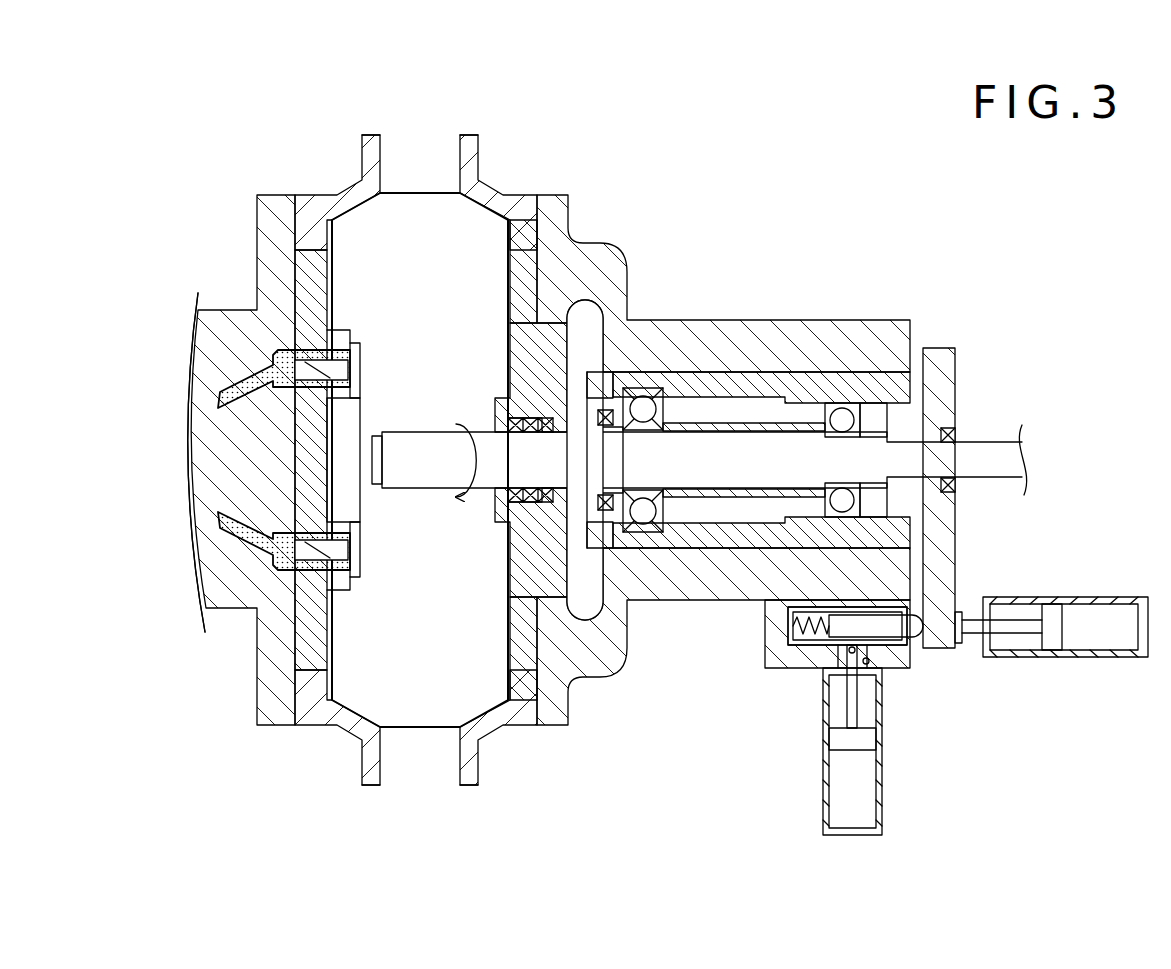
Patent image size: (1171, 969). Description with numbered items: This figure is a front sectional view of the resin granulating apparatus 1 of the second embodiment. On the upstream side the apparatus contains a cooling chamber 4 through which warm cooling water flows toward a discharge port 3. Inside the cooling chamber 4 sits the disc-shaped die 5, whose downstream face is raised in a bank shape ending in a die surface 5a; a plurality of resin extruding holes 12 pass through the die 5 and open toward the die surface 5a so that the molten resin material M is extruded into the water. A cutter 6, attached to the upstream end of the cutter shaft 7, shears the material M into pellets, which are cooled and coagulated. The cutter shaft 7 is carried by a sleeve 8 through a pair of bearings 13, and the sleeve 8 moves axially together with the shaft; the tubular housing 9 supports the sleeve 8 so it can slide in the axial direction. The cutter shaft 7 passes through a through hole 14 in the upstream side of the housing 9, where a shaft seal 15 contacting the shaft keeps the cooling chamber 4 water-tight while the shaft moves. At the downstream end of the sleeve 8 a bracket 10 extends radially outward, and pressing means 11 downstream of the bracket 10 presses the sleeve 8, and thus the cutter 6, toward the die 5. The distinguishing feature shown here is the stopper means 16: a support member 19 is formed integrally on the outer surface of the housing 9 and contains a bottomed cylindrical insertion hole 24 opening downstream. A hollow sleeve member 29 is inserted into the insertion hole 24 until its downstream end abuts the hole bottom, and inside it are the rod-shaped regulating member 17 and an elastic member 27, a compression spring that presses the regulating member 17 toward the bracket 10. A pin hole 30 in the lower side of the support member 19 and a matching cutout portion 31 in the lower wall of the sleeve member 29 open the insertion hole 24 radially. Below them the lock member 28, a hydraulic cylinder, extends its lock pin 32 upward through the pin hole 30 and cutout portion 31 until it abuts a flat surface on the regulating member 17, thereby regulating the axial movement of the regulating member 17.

The resin granulating apparatus 1 is at (728, 222).
The discharge port 3 is at (455, 165).
The cooling chamber 4 is at (425, 299).
The die 5 is at (322, 639).
The die surface 5a is at (352, 364).
The cutter 6 is at (352, 550).
The cutter shaft 7 is at (487, 432).
The sleeve 8 is at (757, 382).
The housing 9 is at (707, 352).
The bracket 10 is at (940, 350).
The pressing means 11 is at (1076, 597).
The resin extruding holes 12 is at (352, 383).
The bearings 13 is at (647, 388).
The through hole 14 is at (488, 480).
The shaft seal 15 is at (511, 504).
The stopper means 16 is at (722, 718).
The regulating member 17 is at (920, 613).
The support member 19 is at (775, 613).
The insertion hole 24 is at (890, 607).
The elastic member 27 is at (792, 628).
The lock member 28 is at (883, 760).
The sleeve member 29 is at (810, 652).
The pin hole 30 is at (870, 662).
The cutout portion 31 is at (840, 660).
The lock pin 32 is at (840, 715).
The molten resin material M is at (220, 398).